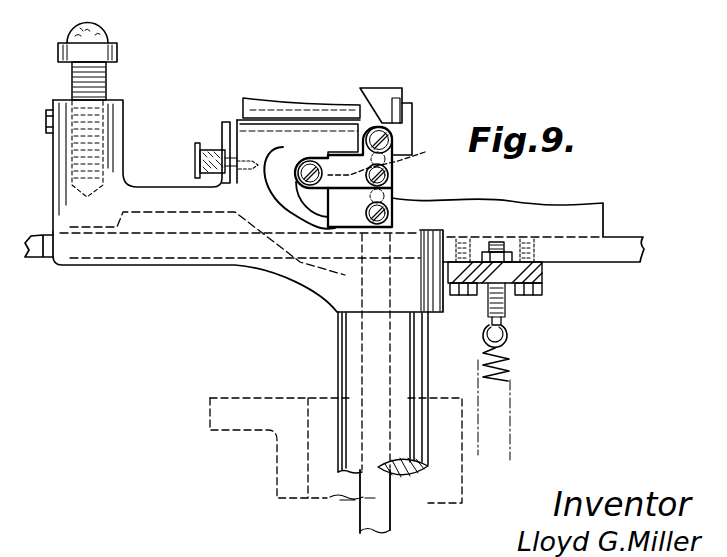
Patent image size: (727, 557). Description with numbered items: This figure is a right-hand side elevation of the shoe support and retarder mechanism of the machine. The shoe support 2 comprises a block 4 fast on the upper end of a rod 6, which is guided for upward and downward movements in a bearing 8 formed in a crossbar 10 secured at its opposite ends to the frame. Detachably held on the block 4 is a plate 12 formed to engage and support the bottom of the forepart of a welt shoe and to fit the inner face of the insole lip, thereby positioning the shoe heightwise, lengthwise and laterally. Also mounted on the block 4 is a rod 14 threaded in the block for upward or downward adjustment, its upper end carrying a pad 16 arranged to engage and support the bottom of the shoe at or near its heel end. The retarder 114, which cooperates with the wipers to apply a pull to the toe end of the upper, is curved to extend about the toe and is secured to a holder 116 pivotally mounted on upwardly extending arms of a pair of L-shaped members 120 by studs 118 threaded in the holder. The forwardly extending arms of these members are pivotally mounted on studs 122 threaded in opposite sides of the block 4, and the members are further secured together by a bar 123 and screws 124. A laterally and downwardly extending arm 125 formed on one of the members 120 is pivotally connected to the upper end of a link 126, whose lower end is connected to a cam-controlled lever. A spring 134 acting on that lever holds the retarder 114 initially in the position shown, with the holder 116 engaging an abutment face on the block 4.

The shoe support 2 is at (163, 272).
The block 4 is at (122, 247).
The rod 6 is at (355, 358).
The bearing 8 is at (424, 489).
The crossbar 10 is at (238, 422).
The plate 12 is at (300, 107).
The rod 14 is at (103, 80).
The pad 16 is at (110, 34).
The retarder 114 is at (377, 93).
The holder 116 is at (413, 113).
The studs 118 is at (392, 143).
The L-shaped members 120 is at (357, 185).
The studs 122 is at (297, 172).
The bar 123 is at (394, 156).
The screws 124 is at (388, 172).
The arm 125 is at (395, 197).
The link 126 is at (360, 517).
The spring 134 is at (510, 373).